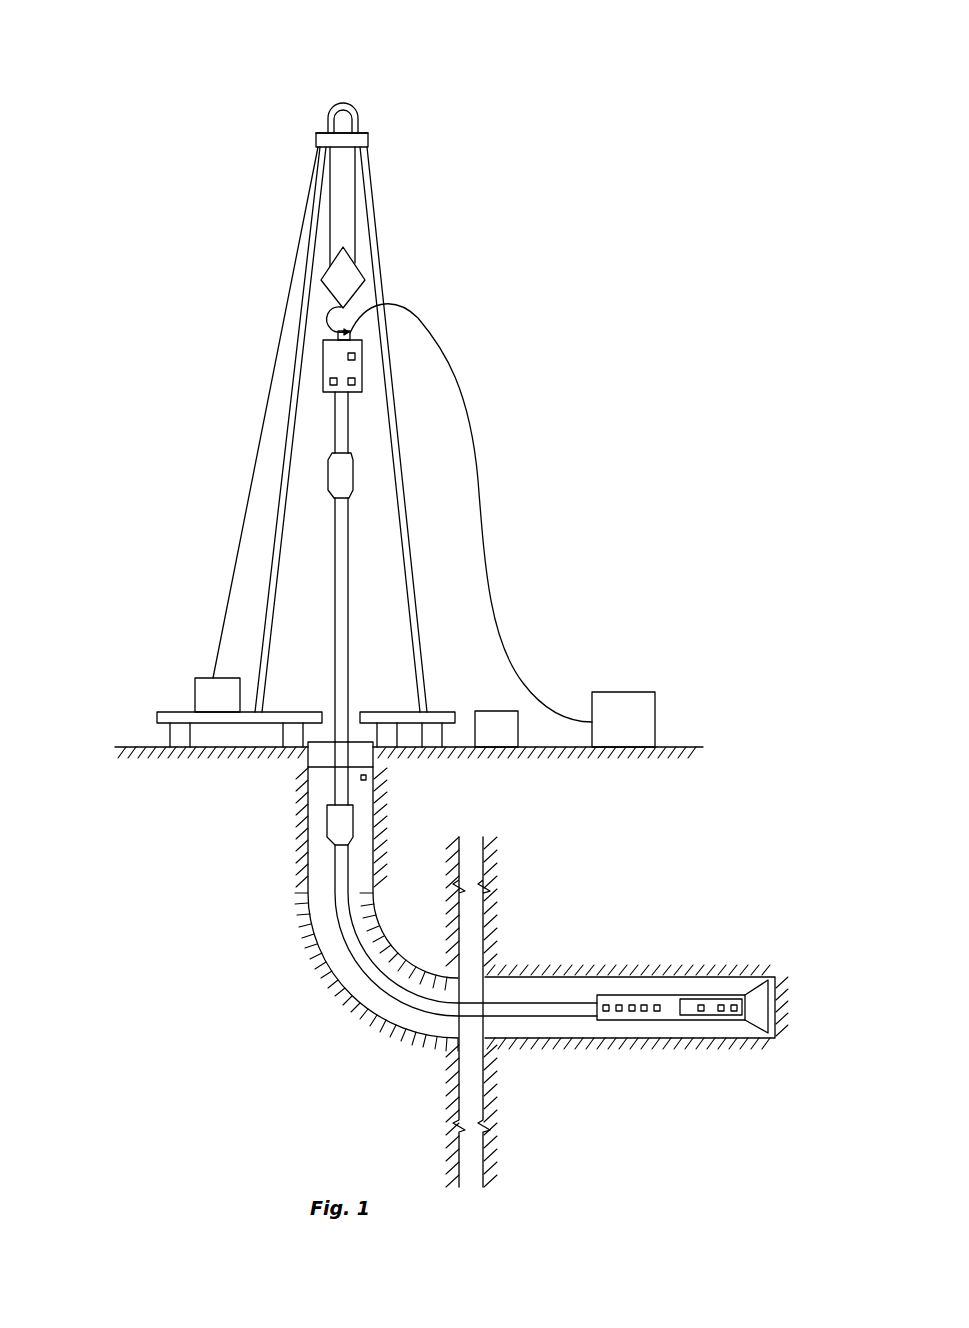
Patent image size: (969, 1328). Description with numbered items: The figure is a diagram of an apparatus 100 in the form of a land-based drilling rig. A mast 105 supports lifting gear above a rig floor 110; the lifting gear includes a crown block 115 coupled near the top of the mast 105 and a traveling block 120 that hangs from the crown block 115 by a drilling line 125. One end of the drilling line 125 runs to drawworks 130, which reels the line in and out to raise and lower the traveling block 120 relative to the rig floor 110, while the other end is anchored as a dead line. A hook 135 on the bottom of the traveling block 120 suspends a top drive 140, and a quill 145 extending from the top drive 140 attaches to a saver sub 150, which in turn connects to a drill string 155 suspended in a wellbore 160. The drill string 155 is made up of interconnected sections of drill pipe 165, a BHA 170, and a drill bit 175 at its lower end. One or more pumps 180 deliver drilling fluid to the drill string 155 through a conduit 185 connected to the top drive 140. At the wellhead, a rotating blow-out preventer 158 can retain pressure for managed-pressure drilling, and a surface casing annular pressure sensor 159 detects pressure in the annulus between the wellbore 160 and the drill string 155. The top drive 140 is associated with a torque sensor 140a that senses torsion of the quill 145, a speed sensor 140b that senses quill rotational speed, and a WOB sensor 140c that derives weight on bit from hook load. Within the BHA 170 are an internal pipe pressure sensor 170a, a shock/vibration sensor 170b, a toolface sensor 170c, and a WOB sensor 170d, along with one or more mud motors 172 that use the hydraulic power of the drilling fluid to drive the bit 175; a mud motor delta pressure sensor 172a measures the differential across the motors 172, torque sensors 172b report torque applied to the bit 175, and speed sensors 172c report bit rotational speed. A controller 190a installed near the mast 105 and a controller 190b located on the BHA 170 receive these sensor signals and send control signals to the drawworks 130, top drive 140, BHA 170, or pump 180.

The apparatus 100 is at (268, 83).
The mast 105 is at (372, 176).
The rig floor 110 is at (157, 715).
The crown block 115 is at (357, 108).
The traveling block 120 is at (365, 280).
The drilling line 125 is at (328, 177).
The drawworks 130 is at (195, 683).
The hook 135 is at (320, 316).
The top drive 140 is at (323, 368).
The torque sensor 140a is at (330, 382).
The speed sensor 140b is at (356, 357).
The WOB sensor 140c is at (356, 382).
The quill 145 is at (335, 423).
The saver sub 150 is at (328, 477).
The drill string 155 is at (322, 540).
The rotating blow-out preventer 158 is at (322, 757).
The surface casing annular pressure sensor 159 is at (366, 779).
The wellbore 160 is at (323, 888).
The drill pipe 165 is at (332, 652).
The BHA 170 is at (675, 1032).
The internal pipe pressure sensor 170a is at (606, 1014).
The shock/vibration sensor 170b is at (621, 1003).
The toolface sensor 170c is at (632, 1014).
The WOB sensor 170d is at (645, 1003).
The motors 172 is at (724, 1014).
The mud motor delta pressure sensor 172a is at (700, 1002).
The torque sensors 172b is at (722, 1002).
The speed sensors 172c is at (736, 1014).
The drill bit 175 is at (768, 983).
The pumps 180 is at (623, 692).
The conduit 185 is at (503, 633).
The controller 190a is at (497, 711).
The controller 190b is at (657, 1014).